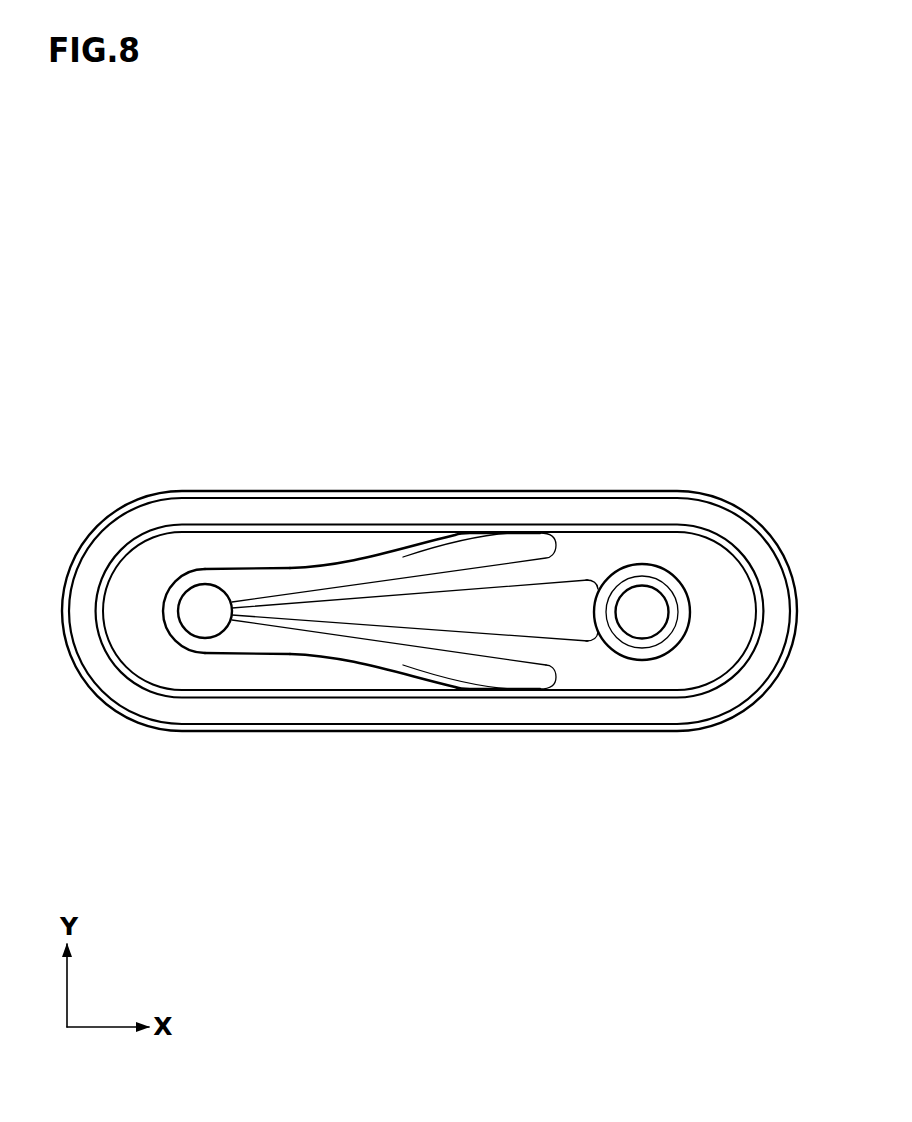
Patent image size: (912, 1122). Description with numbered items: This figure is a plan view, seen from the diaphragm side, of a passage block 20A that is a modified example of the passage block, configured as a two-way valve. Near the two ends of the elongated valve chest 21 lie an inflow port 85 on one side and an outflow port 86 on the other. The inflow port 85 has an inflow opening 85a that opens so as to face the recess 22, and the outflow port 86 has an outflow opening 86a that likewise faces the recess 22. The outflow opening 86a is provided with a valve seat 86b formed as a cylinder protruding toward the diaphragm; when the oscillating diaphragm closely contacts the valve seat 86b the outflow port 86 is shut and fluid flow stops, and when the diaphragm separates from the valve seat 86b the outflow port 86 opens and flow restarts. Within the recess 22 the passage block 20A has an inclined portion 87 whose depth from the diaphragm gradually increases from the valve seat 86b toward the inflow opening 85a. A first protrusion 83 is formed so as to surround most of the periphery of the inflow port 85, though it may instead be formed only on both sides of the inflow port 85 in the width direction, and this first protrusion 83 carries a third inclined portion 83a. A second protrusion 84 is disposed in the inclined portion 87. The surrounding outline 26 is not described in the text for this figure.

The passage block 20A is at (785, 319).
The valve chest 21 is at (395, 680).
The recess 22 is at (393, 607).
The inner frame ring 26 is at (763, 660).
The first protrusion 83 is at (340, 540).
The third inclined portion 83a is at (175, 552).
The second protrusion 84 is at (443, 613).
The inflow port 85 is at (204, 624).
The inflow opening 85a is at (205, 597).
The outflow port 86 is at (640, 622).
The outflow opening 86a is at (642, 593).
The valve seat 86b is at (622, 575).
The inclined portion 87 is at (500, 580).